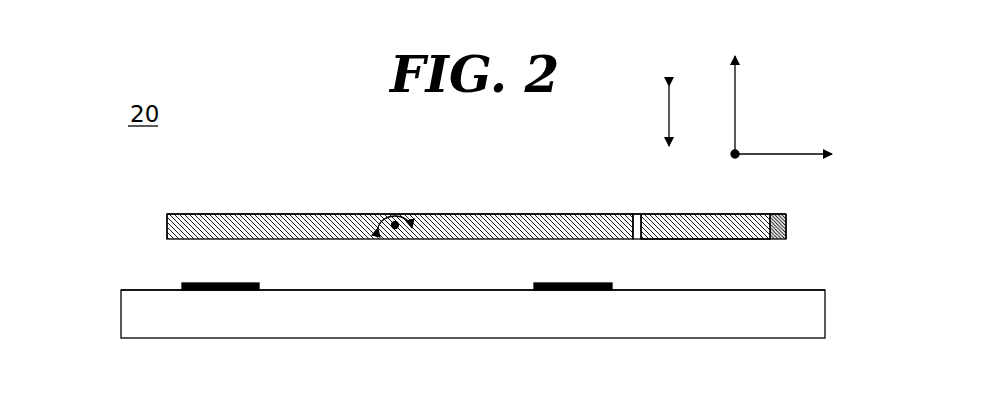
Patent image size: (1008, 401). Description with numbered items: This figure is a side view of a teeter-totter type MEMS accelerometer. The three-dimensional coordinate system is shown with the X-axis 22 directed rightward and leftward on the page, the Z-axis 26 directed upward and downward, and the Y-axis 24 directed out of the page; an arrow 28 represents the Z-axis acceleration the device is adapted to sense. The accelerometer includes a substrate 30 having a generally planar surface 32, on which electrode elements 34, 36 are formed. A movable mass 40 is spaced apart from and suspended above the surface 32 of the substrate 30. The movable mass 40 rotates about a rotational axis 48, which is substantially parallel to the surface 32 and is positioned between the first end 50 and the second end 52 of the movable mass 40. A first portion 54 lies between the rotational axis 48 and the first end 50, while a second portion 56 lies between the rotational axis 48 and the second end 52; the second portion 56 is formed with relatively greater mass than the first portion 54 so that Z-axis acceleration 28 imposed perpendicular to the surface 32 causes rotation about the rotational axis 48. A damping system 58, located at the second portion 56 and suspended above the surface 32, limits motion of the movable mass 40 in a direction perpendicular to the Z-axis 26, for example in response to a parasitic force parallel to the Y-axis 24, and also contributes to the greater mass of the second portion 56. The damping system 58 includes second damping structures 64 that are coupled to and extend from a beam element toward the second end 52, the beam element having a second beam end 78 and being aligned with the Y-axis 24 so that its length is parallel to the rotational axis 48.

The X-axis 22 is at (773, 154).
The Y-axis 24 is at (738, 158).
The Z-axis 26 is at (735, 110).
The Z-axis acceleration 28 is at (670, 112).
The substrate 30 is at (130, 312).
The planar surface 32 is at (293, 290).
The electrode element 34 is at (182, 290).
The electrode element 36 is at (534, 284).
The movable mass 40 is at (497, 213).
The rotational axis 48 is at (393, 232).
The first end 50 is at (166, 224).
The second end 52 is at (637, 232).
The first portion 54 is at (322, 214).
The second portion 56 is at (525, 214).
The damping system 58 is at (818, 223).
The second damping structures 64 is at (690, 232).
The second beam end 78 is at (786, 224).